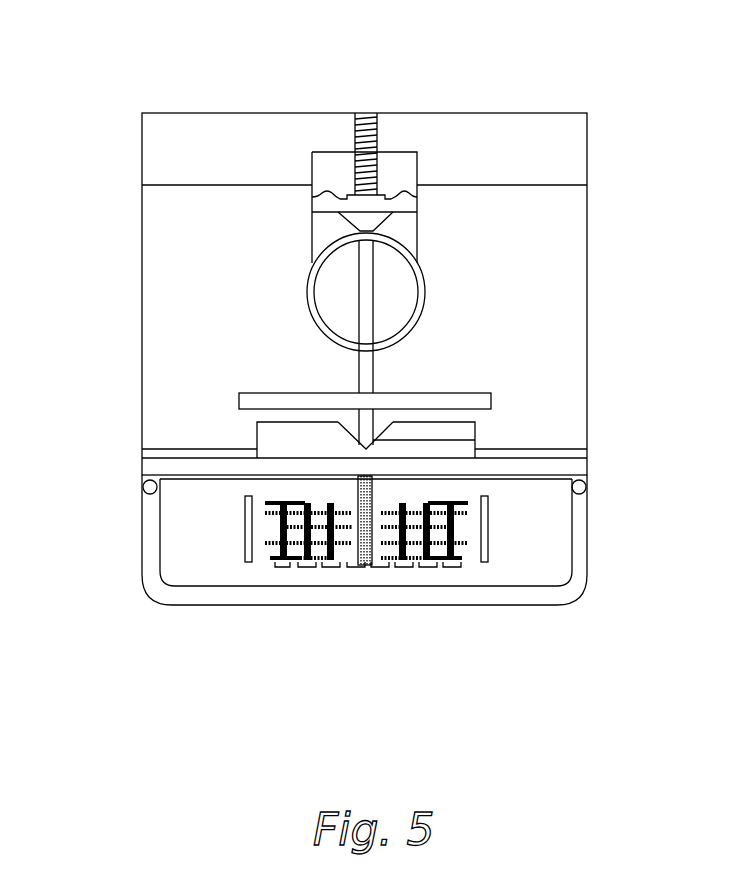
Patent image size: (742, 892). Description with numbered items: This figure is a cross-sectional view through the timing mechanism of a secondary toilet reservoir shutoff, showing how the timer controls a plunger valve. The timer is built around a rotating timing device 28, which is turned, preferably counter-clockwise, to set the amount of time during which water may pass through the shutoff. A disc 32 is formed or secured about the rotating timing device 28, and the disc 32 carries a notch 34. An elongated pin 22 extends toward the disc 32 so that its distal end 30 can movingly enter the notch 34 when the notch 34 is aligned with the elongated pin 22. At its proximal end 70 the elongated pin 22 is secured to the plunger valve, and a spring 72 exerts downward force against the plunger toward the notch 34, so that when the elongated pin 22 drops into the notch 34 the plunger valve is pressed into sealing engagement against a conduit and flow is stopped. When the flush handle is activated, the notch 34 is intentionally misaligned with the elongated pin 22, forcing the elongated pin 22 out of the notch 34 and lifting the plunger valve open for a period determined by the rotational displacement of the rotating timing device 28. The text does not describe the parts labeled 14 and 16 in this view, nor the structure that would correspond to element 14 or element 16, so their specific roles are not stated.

The ring / collar 14 is at (313, 289).
The frame housing 16 is at (570, 371).
The elongated pin 22 is at (363, 297).
The rotating timing device 28 is at (588, 555).
The distal end 30 is at (365, 420).
The disc 32 is at (268, 445).
The notch 34 is at (375, 440).
The proximal end 70 is at (366, 228).
The spring 72 is at (370, 113).